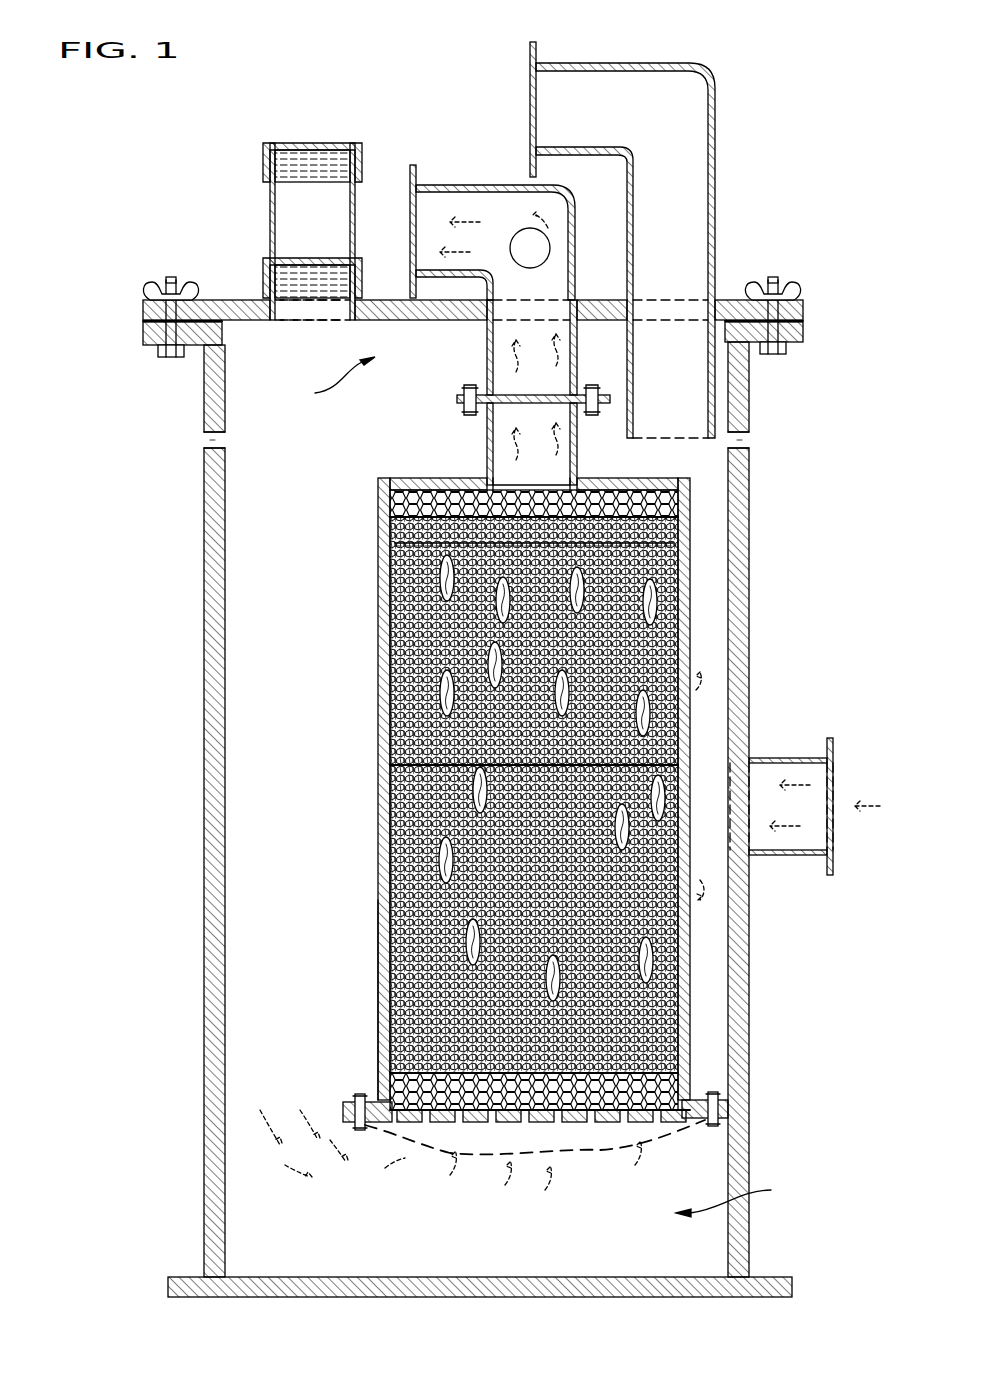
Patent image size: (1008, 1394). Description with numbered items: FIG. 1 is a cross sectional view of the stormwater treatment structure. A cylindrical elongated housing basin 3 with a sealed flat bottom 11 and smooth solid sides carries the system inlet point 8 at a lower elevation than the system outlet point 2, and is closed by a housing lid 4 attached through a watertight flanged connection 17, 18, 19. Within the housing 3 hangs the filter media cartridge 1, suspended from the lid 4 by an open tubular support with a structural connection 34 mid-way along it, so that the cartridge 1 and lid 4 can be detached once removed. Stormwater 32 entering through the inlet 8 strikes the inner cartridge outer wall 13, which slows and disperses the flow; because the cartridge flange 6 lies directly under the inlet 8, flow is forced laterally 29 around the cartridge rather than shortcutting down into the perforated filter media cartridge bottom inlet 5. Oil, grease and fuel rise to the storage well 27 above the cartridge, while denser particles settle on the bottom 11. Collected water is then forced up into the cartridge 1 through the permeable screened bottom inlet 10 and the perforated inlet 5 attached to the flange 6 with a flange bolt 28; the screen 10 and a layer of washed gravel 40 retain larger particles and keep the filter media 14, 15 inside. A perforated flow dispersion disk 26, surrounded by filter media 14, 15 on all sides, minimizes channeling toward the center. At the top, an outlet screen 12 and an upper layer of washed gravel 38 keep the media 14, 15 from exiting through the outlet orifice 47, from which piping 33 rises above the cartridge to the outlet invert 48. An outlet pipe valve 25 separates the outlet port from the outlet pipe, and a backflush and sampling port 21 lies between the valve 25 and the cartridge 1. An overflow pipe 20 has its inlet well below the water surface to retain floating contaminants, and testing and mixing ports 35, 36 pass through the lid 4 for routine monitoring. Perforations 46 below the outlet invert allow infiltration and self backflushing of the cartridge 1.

The filter media cartridge 1 is at (691, 640).
The system outlet point 2 is at (413, 262).
The cylindrical elongated housing basin 3 is at (750, 915).
The housing lid 4 is at (728, 300).
The filter media cartridge bottom inlet 5 is at (343, 1115).
The cartridge flange 6 is at (720, 1107).
The system inlet point 8 is at (777, 758).
The permeable screened bottom inlet 10 is at (575, 1152).
The sealed flat bottom 11 is at (770, 1277).
The outlet screen 12 is at (679, 510).
The inner cartridge outer wall 13 is at (380, 820).
The filter media 14 is at (380, 930).
The filter media 15 is at (390, 713).
The flanged connection 17 is at (806, 293).
The flanged connection 18 is at (805, 320).
The flanged connection 19 is at (805, 335).
The overflow pipe 20 is at (708, 78).
The backflush and sampling port 21 is at (522, 230).
The outlet pipe valve 25 is at (412, 165).
The flow dispersion disk 26 is at (668, 546).
The storage well 27 is at (530, 787).
The flange bolt 28 is at (713, 1098).
The lateral flow direction 29 is at (700, 1098).
The stormwater 32 is at (889, 805).
The outlet piping 33 is at (487, 443).
The structural connection 34 is at (460, 400).
The testing and mixing port 35 is at (300, 258).
The testing and mixing port 36 is at (290, 143).
The upper layer of washed gravel 38 is at (691, 490).
The layer of washed gravel 40 is at (402, 1088).
The perforations 46 is at (203, 440).
The outlet orifice 47 is at (540, 483).
The outlet invert 48 is at (578, 366).